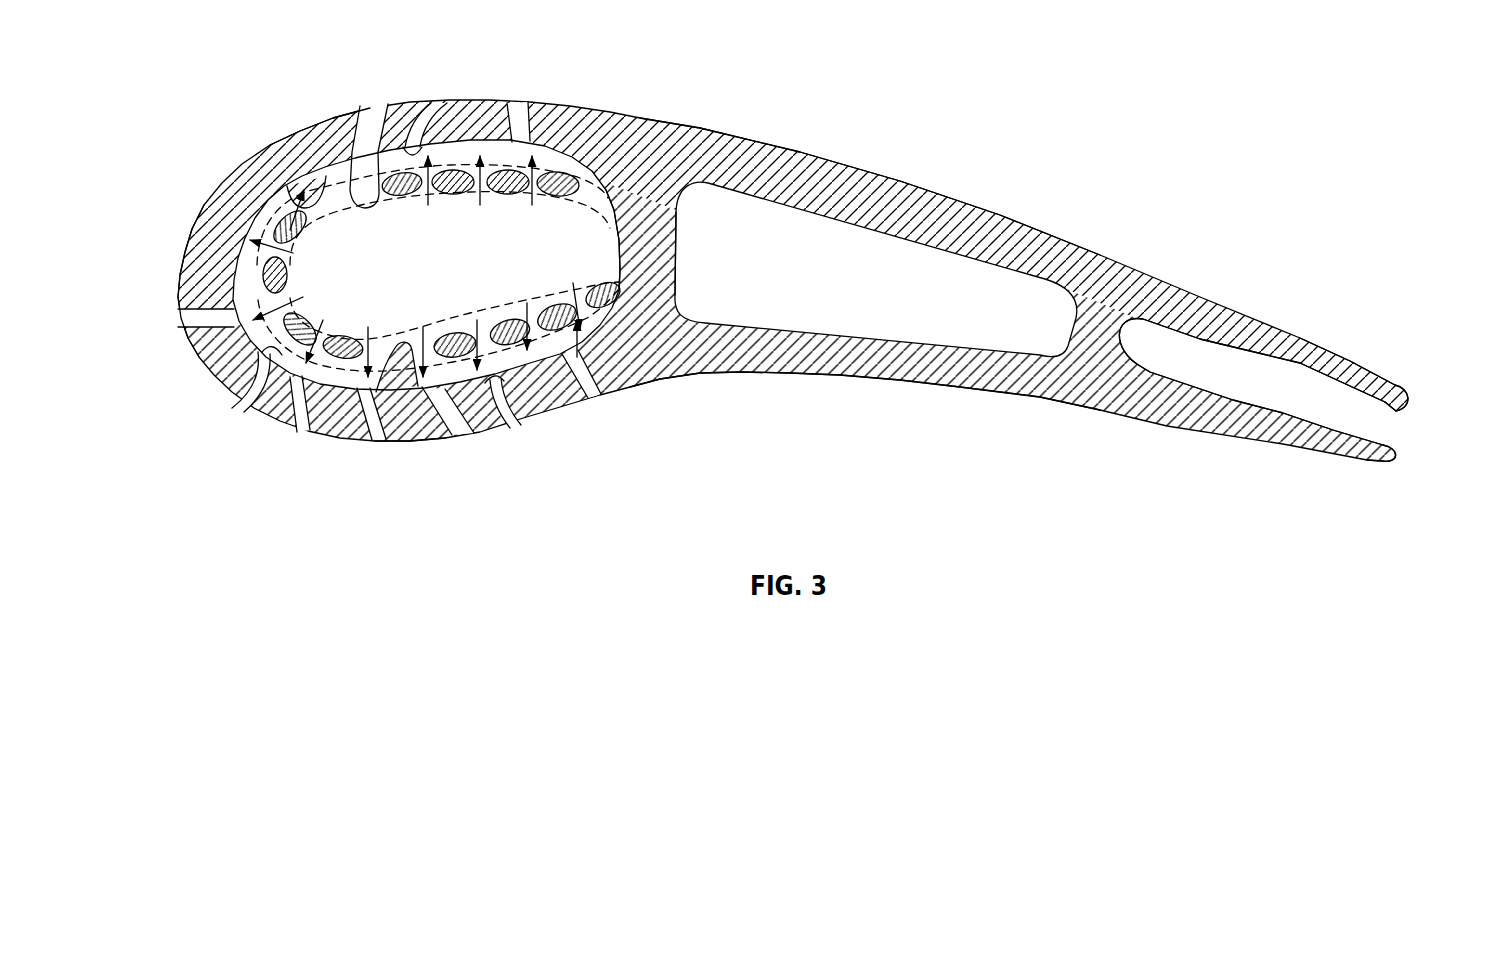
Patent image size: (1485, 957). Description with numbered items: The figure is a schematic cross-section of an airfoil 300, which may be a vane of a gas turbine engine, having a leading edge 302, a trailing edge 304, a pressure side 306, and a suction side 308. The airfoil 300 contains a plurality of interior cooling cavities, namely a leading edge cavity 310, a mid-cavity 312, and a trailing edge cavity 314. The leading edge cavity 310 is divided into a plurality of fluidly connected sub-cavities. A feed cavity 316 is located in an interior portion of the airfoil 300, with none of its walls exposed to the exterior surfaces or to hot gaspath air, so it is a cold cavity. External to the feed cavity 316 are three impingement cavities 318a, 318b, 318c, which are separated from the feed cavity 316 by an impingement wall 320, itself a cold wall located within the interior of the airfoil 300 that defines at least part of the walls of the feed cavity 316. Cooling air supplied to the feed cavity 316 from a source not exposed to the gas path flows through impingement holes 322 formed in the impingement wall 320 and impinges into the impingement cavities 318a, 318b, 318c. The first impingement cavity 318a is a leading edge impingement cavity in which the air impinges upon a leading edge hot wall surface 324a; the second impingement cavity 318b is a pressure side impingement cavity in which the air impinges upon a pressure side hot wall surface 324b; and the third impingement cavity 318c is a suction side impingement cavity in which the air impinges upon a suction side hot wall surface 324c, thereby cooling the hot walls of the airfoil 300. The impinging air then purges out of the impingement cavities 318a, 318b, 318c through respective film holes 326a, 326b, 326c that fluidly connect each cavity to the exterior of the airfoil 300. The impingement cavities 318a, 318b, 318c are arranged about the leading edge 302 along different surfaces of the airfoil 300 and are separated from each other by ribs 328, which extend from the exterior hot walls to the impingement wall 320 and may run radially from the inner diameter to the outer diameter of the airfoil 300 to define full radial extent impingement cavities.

The airfoil 300 is at (1094, 72).
The leading edge 302 is at (189, 334).
The trailing edge 304 is at (1404, 414).
The pressure side 306 is at (683, 375).
The suction side 308 is at (690, 128).
The leading edge cavity 310 is at (471, 281).
The mid-cavity 312 is at (801, 275).
The trailing edge cavity 314 is at (1236, 381).
The feed cavity 316 is at (576, 237).
The first impingement cavity 318a is at (234, 298).
The second impingement cavity 318b is at (562, 400).
The third impingement cavity 318c is at (470, 156).
The impingement wall 320 is at (284, 184).
The impingement holes 322 is at (437, 190).
The leading edge hot wall surface 324a is at (244, 405).
The pressure side hot wall surface 324b is at (512, 418).
The suction side hot wall surface 324c is at (433, 128).
The film hole 326a is at (303, 432).
The film hole 326b is at (469, 440).
The film hole 326c is at (382, 103).
The ribs 328 is at (323, 137).